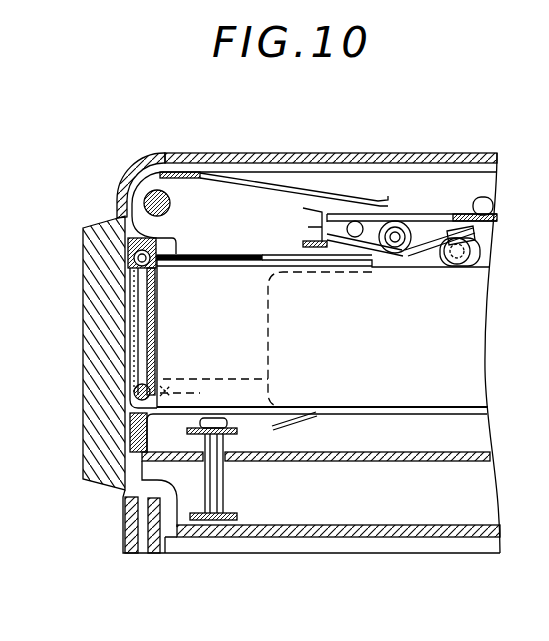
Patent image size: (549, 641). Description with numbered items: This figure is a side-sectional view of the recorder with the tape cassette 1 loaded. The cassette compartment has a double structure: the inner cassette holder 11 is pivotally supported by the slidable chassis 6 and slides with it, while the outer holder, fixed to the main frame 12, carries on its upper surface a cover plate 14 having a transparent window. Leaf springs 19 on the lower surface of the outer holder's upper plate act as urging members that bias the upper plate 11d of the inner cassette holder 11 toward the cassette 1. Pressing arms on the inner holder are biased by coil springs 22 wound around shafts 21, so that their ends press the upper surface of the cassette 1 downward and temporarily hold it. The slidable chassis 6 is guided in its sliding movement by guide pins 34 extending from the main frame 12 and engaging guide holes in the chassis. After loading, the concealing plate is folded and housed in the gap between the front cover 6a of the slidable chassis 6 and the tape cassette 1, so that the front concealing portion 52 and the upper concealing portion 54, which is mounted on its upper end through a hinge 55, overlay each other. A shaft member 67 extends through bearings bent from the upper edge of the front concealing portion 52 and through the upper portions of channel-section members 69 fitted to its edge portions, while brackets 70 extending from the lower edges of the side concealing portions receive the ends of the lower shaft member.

The tape cassette 1 is at (250, 307).
The slidable chassis 6 is at (367, 461).
The front cover 6a is at (95, 262).
The inner cassette holder 11 is at (460, 341).
The upper plate 11d is at (472, 213).
The main frame 12 is at (432, 527).
The cover plate 14 is at (367, 152).
The leaf springs 19 is at (320, 190).
The shafts 21 is at (400, 225).
The coil springs 22 is at (433, 249).
The guide pins 34 is at (212, 498).
The front concealing portion 52 is at (135, 316).
The upper concealing portion 54 is at (157, 328).
The hinge 55 is at (126, 250).
The shaft member 67 is at (160, 270).
The members having channel-like cross-section 69 is at (150, 380).
The brackets 70 is at (214, 393).